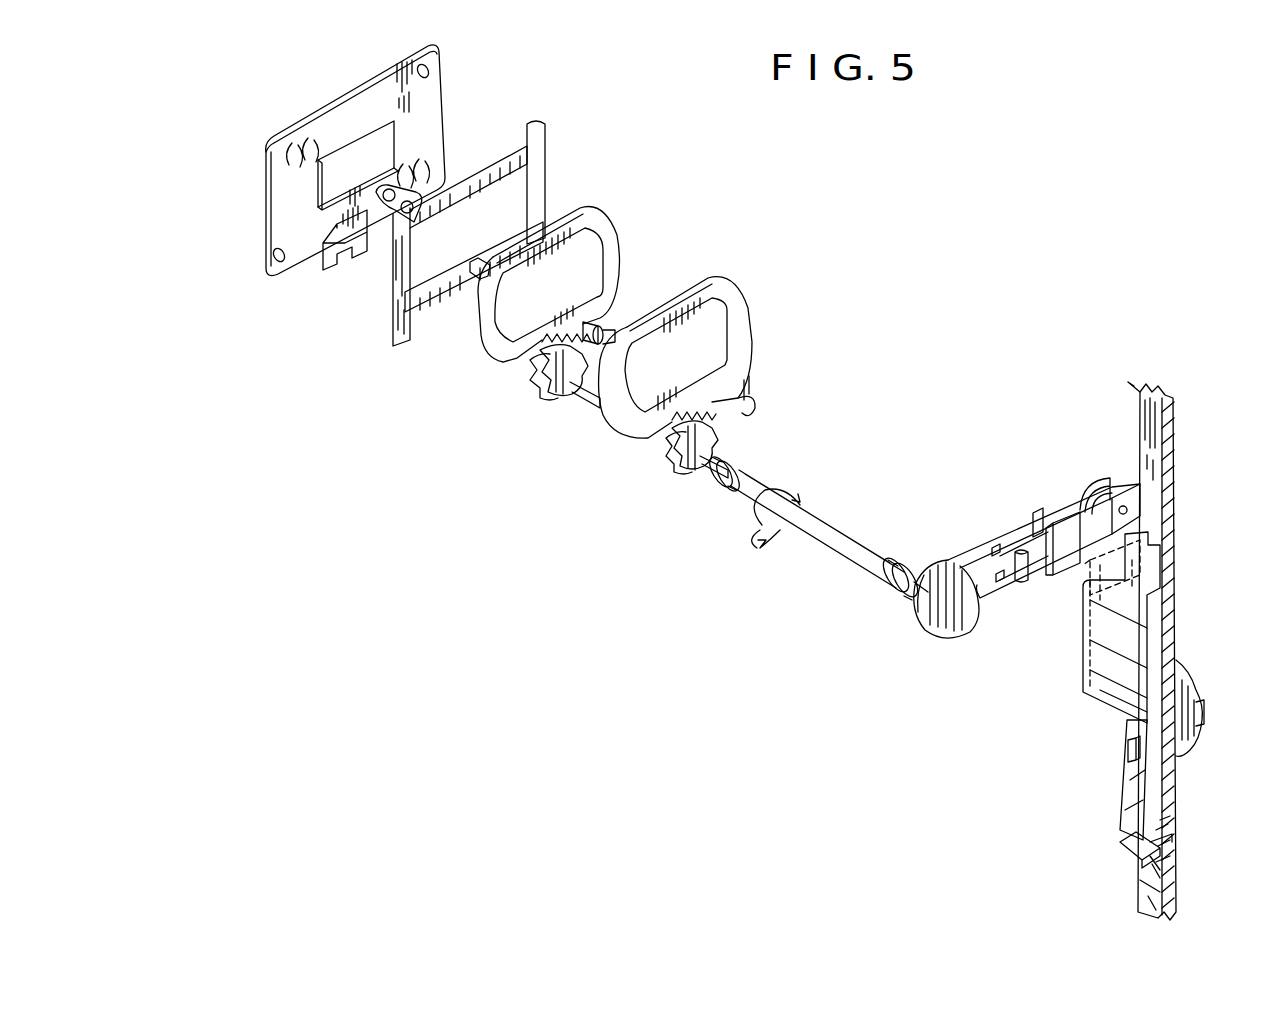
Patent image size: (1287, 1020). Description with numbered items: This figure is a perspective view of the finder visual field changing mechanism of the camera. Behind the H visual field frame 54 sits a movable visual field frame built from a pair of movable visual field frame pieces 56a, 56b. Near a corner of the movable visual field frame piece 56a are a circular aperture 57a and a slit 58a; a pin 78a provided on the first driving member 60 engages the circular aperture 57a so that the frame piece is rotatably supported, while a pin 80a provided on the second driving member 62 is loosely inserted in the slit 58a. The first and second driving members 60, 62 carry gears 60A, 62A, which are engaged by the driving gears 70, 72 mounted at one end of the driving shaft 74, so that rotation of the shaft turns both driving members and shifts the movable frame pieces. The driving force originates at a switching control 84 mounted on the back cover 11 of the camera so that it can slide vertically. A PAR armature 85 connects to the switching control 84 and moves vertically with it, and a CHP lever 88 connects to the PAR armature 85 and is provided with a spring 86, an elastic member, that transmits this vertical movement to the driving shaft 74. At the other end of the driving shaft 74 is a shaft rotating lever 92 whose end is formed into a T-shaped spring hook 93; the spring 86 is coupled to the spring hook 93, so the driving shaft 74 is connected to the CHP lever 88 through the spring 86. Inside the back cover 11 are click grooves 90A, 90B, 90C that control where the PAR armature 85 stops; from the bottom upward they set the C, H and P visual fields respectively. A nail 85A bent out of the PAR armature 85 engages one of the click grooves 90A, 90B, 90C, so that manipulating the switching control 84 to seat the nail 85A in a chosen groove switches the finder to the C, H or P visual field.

The back cover 11 is at (1166, 426).
The H visual field frame 54 is at (270, 243).
The movable visual field frame piece 56a is at (393, 290).
The movable visual field frame piece 56b is at (543, 183).
The circular aperture 57a is at (392, 212).
The slit 58a is at (408, 202).
The first driving member 60 is at (740, 328).
The gear 60A is at (712, 418).
The second driving member 62 is at (614, 246).
The gear 62A is at (545, 358).
The driving gear 70 is at (672, 458).
The driving gear 72 is at (538, 390).
The driving shaft 74 is at (830, 533).
The pin 78a is at (600, 320).
The pin 80a is at (478, 272).
The switching control 84 is at (1178, 670).
The PAR armature 85 is at (1128, 786).
The nail 85A is at (1132, 846).
The spring 86 is at (1045, 538).
The CHP lever 88 is at (1090, 641).
The click groove 90A is at (1166, 820).
The click groove 90B is at (1166, 880).
The click groove 90C is at (1148, 896).
The shaft rotating lever 92 is at (955, 630).
The spring hook 93 is at (1030, 560).
The P visual field P is at (1172, 828).
The H visual field H is at (1176, 848).
The C visual field C is at (1178, 870).